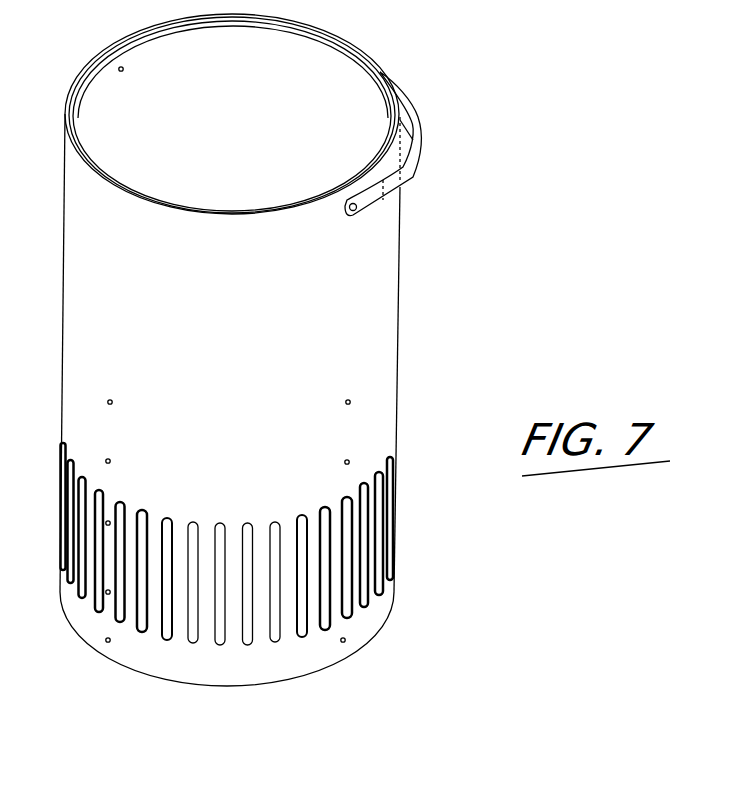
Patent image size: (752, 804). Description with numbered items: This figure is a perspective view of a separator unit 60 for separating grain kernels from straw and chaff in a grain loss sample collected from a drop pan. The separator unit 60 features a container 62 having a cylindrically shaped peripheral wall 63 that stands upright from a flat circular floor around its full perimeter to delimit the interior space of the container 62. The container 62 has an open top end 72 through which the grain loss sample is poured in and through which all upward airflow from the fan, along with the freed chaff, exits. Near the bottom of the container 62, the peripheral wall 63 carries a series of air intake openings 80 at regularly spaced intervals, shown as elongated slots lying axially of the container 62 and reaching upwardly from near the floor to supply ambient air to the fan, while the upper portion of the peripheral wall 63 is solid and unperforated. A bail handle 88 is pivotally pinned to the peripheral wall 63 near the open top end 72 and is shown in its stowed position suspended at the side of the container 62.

The separator unit 60 is at (483, 160).
The container 62 is at (370, 275).
The peripheral wall 63 is at (382, 340).
The open top end 72 is at (312, 75).
The air intake openings 80 is at (367, 517).
The bail handle 88 is at (413, 158).